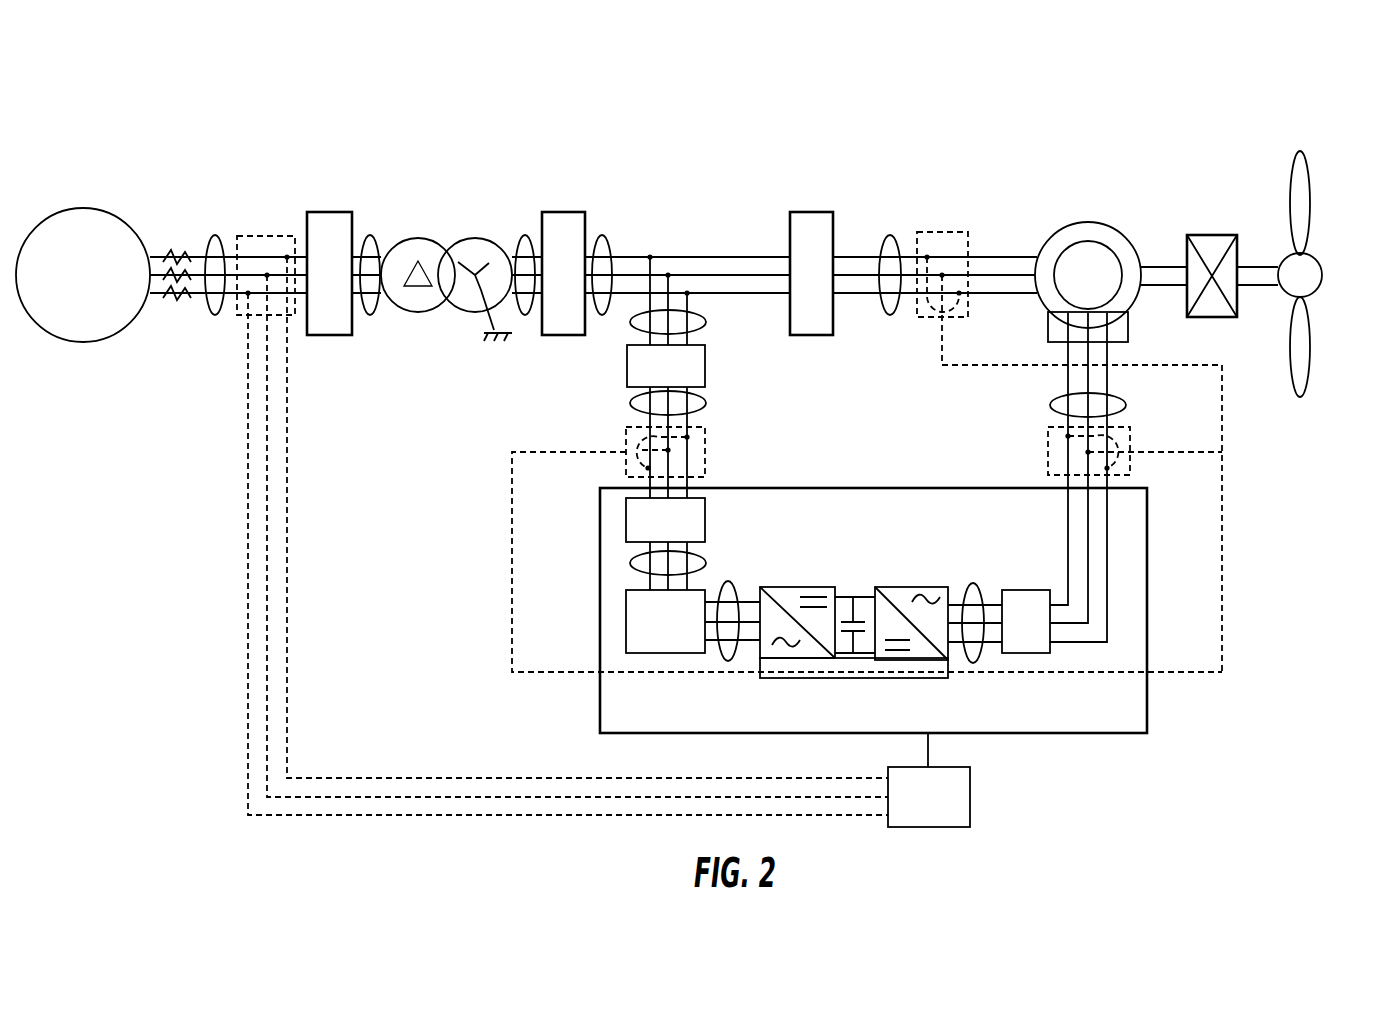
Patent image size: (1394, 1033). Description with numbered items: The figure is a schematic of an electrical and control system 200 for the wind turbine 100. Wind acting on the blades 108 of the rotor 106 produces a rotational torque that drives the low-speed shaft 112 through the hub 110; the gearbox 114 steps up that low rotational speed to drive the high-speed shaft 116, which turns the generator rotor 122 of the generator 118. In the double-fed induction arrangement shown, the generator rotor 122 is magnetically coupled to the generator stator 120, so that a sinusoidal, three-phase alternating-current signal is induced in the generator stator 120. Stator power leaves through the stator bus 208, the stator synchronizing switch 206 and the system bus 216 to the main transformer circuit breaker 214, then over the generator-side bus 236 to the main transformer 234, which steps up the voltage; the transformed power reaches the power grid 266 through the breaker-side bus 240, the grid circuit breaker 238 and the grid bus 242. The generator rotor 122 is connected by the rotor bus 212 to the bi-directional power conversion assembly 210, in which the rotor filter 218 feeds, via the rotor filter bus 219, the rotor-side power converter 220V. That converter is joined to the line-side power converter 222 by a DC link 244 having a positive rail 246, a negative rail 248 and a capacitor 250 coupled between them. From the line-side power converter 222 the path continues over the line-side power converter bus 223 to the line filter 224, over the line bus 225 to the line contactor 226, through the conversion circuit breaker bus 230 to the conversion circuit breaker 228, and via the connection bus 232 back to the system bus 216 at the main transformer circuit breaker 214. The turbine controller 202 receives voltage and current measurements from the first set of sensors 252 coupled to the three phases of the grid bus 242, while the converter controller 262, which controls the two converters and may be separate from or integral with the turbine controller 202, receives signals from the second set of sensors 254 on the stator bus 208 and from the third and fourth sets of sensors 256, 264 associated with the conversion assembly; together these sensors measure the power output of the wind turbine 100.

The wind turbine 100 is at (1264, 88).
The rotor 106 is at (1334, 241).
The blades 108 is at (1310, 178).
The hub 110 is at (1323, 274).
The low-speed shaft 112 is at (1256, 266).
The gearbox 114 is at (1218, 235).
The high-speed shaft 116 is at (1155, 266).
The generator 118 is at (1037, 144).
The generator stator 120 is at (1088, 222).
The generator rotor 122 is at (1070, 262).
The electrical and control system 200 is at (246, 162).
The turbine controller 202 is at (912, 812).
The stator synchronizing switch 206 is at (811, 212).
The stator bus 208 is at (890, 236).
The power conversion assembly 210 is at (1149, 575).
The rotor bus 212 is at (1126, 405).
The main transformer circuit breaker 214 is at (564, 212).
The system bus 216 is at (603, 236).
The rotor filter 218 is at (1025, 590).
The rotor filter bus 219 is at (974, 583).
The rotor-side power converter 220V is at (950, 657).
The line-side power converter 222 is at (760, 658).
The line-side power converter bus 223 is at (729, 582).
The line filter 224 is at (626, 620).
The line bus 225 is at (632, 562).
The line contactor 226 is at (626, 518).
The conversion circuit breaker 228 is at (627, 365).
The conversion circuit breaker bus 230 is at (632, 406).
The connection bus 232 is at (704, 326).
The main transformer 234 is at (473, 239).
The generator-side bus 236 is at (525, 236).
The grid circuit breaker 238 is at (330, 212).
The breaker-side bus 240 is at (372, 236).
The grid bus 242 is at (214, 236).
The DC link 244 is at (860, 534).
The positive rail 246 is at (875, 589).
The negative rail 248 is at (860, 656).
The capacitor 250 is at (853, 597).
The first set of voltage and electric current sensors 252 is at (236, 338).
The second set of voltage and electric current sensors 254 is at (962, 218).
The third set of voltage and electric current sensors 256 is at (1036, 452).
The converter controller 262 is at (910, 668).
The fourth set of voltage and electric current sensors 264 is at (706, 452).
The power grid 266 is at (67, 312).